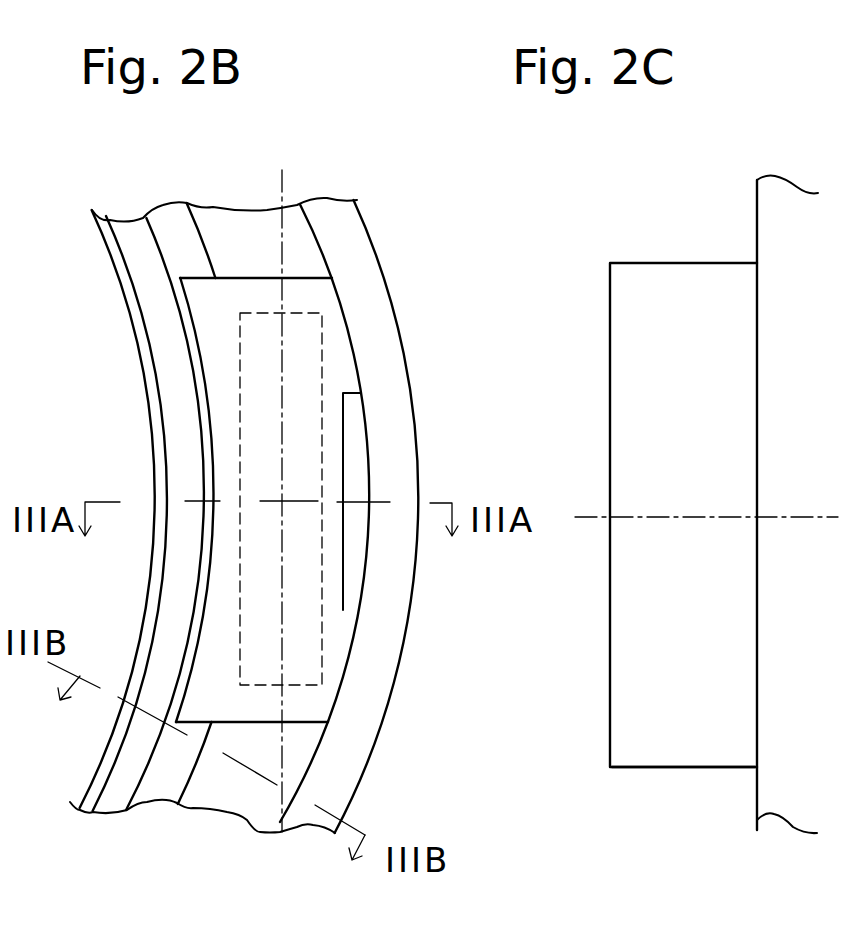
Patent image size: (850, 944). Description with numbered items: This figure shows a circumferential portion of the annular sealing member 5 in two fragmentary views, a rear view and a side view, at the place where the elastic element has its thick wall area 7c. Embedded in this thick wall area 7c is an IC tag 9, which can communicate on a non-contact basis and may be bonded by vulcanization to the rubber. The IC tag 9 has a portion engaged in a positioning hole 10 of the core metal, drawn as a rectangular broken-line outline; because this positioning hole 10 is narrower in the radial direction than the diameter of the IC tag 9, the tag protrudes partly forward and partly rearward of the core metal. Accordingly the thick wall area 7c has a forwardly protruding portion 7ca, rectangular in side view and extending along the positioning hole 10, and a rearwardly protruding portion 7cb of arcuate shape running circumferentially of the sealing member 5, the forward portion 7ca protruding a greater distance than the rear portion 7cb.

In FIG. 2B, the sealing member 5 is at (396, 253).
In FIG. 2C, the sealing member 5 is at (806, 158).
In FIG. 2B, the thick wall area 7c is at (198, 314).
In FIG. 2C, the thick wall area 7c is at (652, 653).
In FIG. 2C, the forwardly protruding portion 7ca is at (670, 737).
In FIG. 2B, the rearwardly protruding portion 7cb is at (199, 344).
In FIG. 2B, the IC tag 9 is at (262, 553).
In FIG. 2B, the positioning hole 10 is at (330, 383).